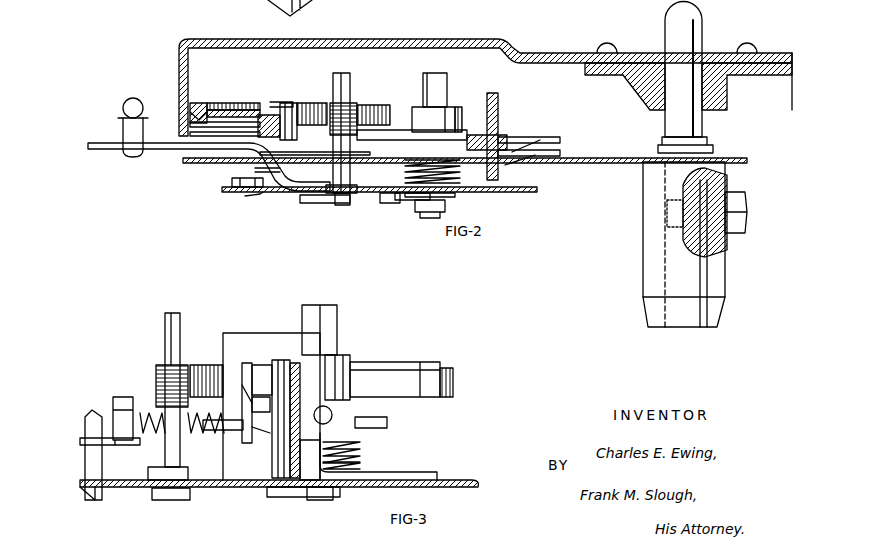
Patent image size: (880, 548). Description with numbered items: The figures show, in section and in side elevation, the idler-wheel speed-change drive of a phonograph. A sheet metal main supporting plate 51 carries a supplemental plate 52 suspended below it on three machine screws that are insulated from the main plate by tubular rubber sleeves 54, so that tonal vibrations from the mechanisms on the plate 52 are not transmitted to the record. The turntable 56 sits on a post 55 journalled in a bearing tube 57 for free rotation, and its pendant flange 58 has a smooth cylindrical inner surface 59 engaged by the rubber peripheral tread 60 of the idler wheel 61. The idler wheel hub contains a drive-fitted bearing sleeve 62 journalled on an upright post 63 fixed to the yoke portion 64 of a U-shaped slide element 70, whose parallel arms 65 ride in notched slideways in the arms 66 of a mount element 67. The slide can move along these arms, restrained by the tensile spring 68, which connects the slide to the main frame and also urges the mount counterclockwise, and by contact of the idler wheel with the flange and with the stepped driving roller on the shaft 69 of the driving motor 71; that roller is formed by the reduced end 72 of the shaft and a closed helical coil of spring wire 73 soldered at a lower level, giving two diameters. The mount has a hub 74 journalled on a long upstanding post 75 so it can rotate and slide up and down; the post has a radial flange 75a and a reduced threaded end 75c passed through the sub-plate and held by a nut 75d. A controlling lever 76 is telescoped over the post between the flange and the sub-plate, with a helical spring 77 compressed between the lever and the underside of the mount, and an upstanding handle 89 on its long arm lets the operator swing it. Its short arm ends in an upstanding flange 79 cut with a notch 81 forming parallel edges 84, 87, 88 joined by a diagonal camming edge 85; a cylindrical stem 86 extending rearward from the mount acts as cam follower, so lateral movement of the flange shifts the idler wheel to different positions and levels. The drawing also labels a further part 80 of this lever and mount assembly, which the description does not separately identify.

In FIG. 2, the main supporting plate 51 is at (585, 163).
In FIG. 3, the main supporting plate 51 is at (82, 443).
In FIG. 2, the supplemental plate 52 is at (537, 187).
In FIG. 3, the supplemental plate 52 is at (475, 480).
In FIG. 2, the tubular rubber sleeve 54 is at (257, 170).
In FIG. 3, the tubular rubber sleeve 54 is at (85, 462).
In FIG. 2, the post 55 is at (698, 30).
In FIG. 2, the turntable 56 is at (535, 50).
In FIG. 2, the bearing tube 57 is at (655, 235).
In FIG. 2, the pendant flange 58 is at (179, 58).
In FIG. 2, the smooth cylindrical inner surface 59 is at (189, 66).
In FIG. 2, the rubber peripheral tread 60 is at (200, 103).
In FIG. 3, the rubber peripheral tread 60 is at (455, 372).
In FIG. 2, the idler wheel 61 is at (252, 103).
In FIG. 3, the idler wheel 61 is at (430, 365).
In FIG. 2, the bearing sleeve 62 is at (270, 115).
In FIG. 2, the upright post 63 is at (290, 130).
In FIG. 2, the yoke portion 64 is at (327, 108).
In FIG. 2, the parallel arm 65 is at (437, 135).
In FIG. 3, the parallel arm 65 is at (232, 432).
In FIG. 2, the mount arm 66 is at (500, 118).
In FIG. 3, the mount arm 66 is at (262, 397).
In FIG. 2, the mount element 67 is at (398, 125).
In FIG. 3, the tensile spring 68 is at (200, 434).
In FIG. 2, the shaft 69 is at (345, 205).
In FIG. 3, the shaft 69 is at (196, 487).
In FIG. 2, the slide element 70 is at (395, 203).
In FIG. 2, the driving motor 71 is at (245, 198).
In FIG. 3, the driving motor 71 is at (185, 500).
In FIG. 2, the reduced end 72 is at (352, 82).
In FIG. 3, the reduced end 72 is at (180, 328).
In FIG. 2, the helically wound spring wire 73 is at (357, 108).
In FIG. 3, the helically wound spring wire 73 is at (156, 372).
In FIG. 2, the hub 74 is at (460, 107).
In FIG. 3, the hub 74 is at (350, 360).
In FIG. 2, the upstanding post 75 is at (447, 78).
In FIG. 3, the upstanding post 75 is at (338, 313).
In FIG. 2, the radial flange 75a is at (407, 200).
In FIG. 3, the radial flange 75a is at (362, 460).
In FIG. 2, the reduced threaded end 75c is at (450, 200).
In FIG. 3, the reduced threaded end 75c is at (318, 500).
In FIG. 2, the nut 75d is at (490, 210).
In FIG. 3, the nut 75d is at (342, 492).
In FIG. 2, the controlling lever 76 is at (172, 150).
In FIG. 3, the controlling lever 76 is at (420, 470).
In FIG. 2, the helical spring 77 is at (500, 155).
In FIG. 3, the helical spring 77 is at (362, 447).
In FIG. 2, the upstanding flange 79 is at (500, 96).
In FIG. 3, the upstanding flange 79 is at (270, 333).
In FIG. 3, the bracket arm 80 is at (278, 447).
In FIG. 2, the notch 81 is at (508, 157).
In FIG. 3, the notch 81 is at (252, 403).
In FIG. 2, the edge surface 84 is at (318, 3).
In FIG. 3, the edge surface 84 is at (252, 427).
In FIG. 3, the diagonal edge portion 85 is at (262, 366).
In FIG. 2, the cylindrical stem 86 is at (513, 150).
In FIG. 3, the cylindrical stem 86 is at (330, 410).
In FIG. 3, the edge surface 87 is at (250, 363).
In FIG. 3, the edge surface 88 is at (302, 410).
In FIG. 2, the upstanding handle 89 is at (122, 105).